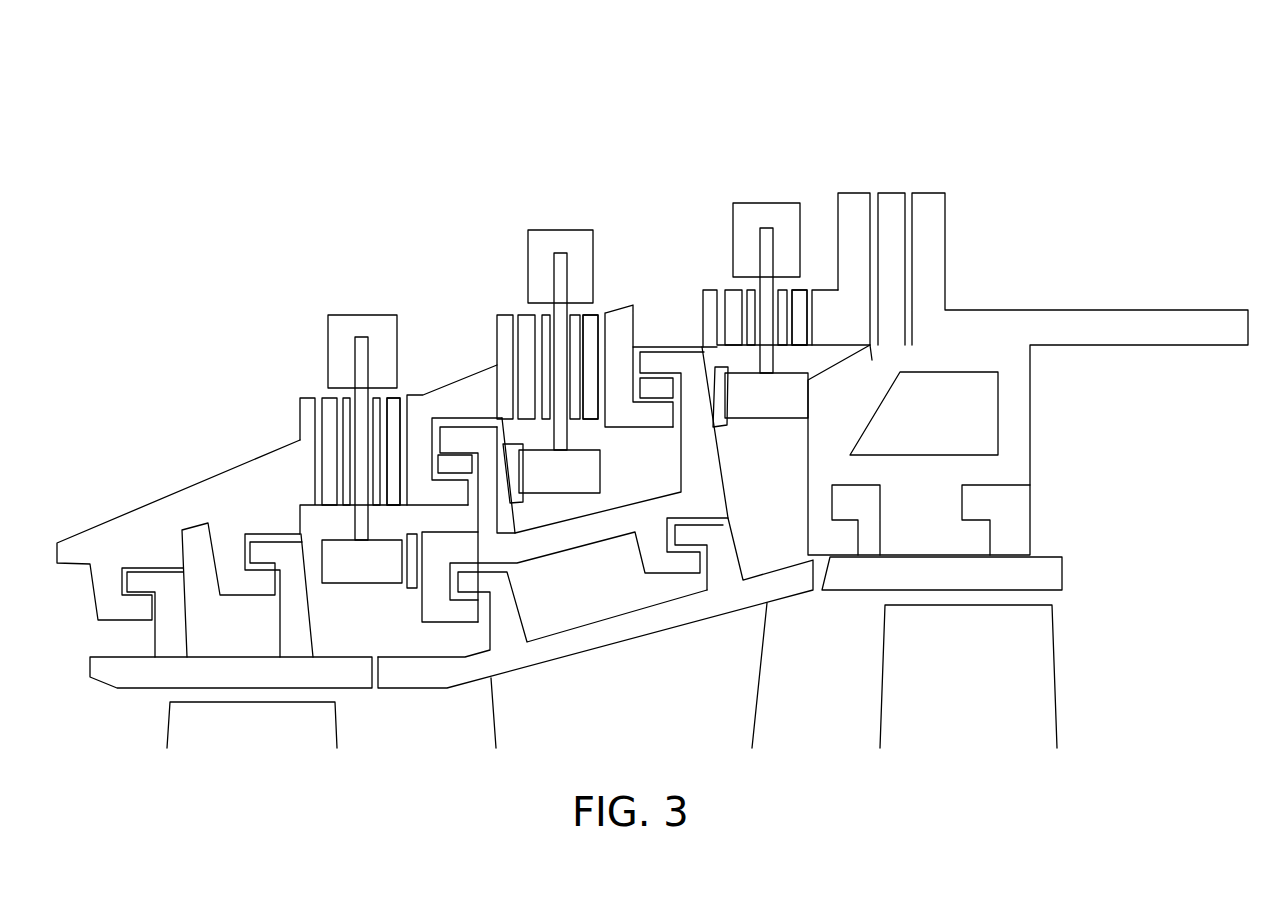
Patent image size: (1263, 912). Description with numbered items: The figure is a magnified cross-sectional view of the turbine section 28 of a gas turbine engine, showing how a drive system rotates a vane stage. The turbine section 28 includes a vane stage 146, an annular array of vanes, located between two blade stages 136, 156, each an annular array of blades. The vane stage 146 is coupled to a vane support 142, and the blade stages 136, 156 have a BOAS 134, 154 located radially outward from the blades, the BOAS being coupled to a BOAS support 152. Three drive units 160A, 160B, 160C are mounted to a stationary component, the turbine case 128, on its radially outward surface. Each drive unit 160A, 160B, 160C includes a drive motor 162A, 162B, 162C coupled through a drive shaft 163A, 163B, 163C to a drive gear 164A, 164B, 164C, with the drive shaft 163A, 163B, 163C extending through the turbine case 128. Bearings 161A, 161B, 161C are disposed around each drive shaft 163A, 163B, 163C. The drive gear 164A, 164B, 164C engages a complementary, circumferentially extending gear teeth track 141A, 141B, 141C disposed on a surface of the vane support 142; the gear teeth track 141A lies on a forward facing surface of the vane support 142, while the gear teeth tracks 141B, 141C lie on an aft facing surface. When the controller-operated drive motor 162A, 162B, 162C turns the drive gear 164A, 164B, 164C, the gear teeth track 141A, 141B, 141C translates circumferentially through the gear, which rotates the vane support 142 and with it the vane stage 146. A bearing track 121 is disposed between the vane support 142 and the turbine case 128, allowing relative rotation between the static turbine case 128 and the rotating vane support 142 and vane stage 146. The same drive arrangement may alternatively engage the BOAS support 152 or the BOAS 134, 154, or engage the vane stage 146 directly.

The turbine section 28 is at (300, 98).
The bearing track 121 is at (452, 463).
The turbine case 128 is at (248, 478).
The BOAS 134 is at (93, 673).
The blade stage 136 is at (323, 730).
The gear teeth track 141A is at (413, 583).
The gear teeth track 141B is at (510, 458).
The gear teeth track 141C is at (717, 380).
The vane support 142 is at (720, 480).
The vane stage 146 is at (745, 683).
The BOAS support 152 is at (1030, 440).
The BOAS 154 is at (1050, 578).
The blade stage 156 is at (1045, 680).
The drive unit 160A is at (310, 290).
The drive unit 160B is at (495, 230).
The drive unit 160C is at (723, 180).
The bearing 161A is at (328, 428).
The bearing 161B is at (520, 342).
The bearing 161C is at (732, 303).
The drive motor 162A is at (383, 325).
The drive motor 162B is at (580, 237).
The drive motor 162C is at (743, 213).
The drive shaft 163A is at (362, 430).
The drive shaft 163B is at (565, 338).
The drive shaft 163C is at (765, 303).
The drive gear 164A is at (362, 573).
The drive gear 164B is at (585, 472).
The drive gear 164C is at (770, 407).